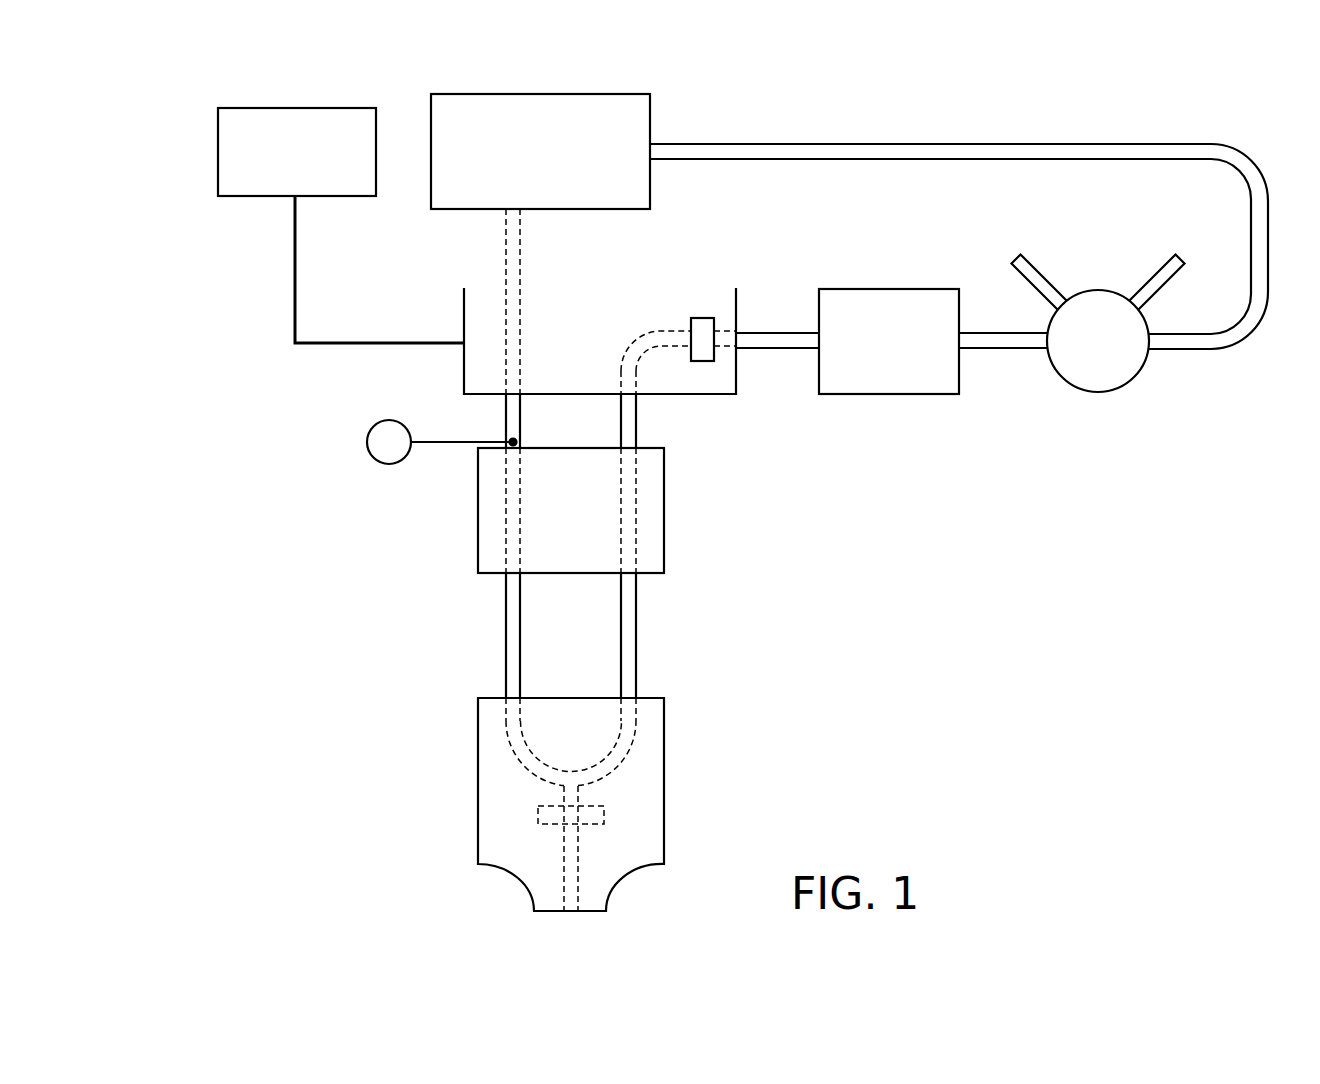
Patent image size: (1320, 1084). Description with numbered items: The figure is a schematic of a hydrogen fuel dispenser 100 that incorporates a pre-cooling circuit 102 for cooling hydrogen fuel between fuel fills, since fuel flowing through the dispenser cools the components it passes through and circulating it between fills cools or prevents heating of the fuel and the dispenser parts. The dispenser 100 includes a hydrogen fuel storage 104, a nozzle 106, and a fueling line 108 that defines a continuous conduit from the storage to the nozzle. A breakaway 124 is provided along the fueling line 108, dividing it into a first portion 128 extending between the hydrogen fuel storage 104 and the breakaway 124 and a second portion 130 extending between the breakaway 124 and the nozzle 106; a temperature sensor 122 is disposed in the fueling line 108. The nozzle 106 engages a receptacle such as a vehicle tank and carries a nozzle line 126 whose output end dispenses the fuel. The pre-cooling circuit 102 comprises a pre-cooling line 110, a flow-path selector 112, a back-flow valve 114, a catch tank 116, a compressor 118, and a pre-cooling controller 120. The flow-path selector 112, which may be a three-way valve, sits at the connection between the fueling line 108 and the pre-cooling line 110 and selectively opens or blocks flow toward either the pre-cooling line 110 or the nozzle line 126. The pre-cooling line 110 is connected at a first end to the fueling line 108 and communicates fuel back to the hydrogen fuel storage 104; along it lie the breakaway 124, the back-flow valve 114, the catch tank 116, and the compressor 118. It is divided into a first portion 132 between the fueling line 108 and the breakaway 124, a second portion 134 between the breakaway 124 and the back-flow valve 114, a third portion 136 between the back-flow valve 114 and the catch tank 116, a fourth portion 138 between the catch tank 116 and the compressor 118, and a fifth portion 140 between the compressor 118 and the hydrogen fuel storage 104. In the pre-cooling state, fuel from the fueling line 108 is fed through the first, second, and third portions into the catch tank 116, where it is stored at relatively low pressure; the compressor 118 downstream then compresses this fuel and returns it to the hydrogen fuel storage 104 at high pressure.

The hydrogen fuel dispenser 100 is at (202, 447).
The pre-cooling circuit 102 is at (813, 582).
The hydrogen fuel storage 104 is at (649, 113).
The nozzle 106 is at (563, 810).
The fueling line 108 is at (452, 465).
The pre-cooling line 110 is at (682, 546).
The flow-path selector 112 is at (603, 820).
The back-flow valve 114 is at (702, 317).
The catch tank 116 is at (907, 393).
The compressor 118 is at (1090, 391).
The pre-cooling controller 120 is at (217, 145).
The temperature sensor 122 is at (367, 430).
The breakaway 124 is at (477, 538).
The nozzle line 126 is at (562, 882).
The first portion of the fueling line 128 is at (503, 415).
The second portion of the fueling line 130 is at (505, 658).
The first portion of the pre-cooling line 132 is at (635, 657).
The second portion of the pre-cooling line 134 is at (637, 412).
The third portion of the pre-cooling line 136 is at (772, 330).
The fourth portion of the pre-cooling line 138 is at (1002, 348).
The fifth portion of the pre-cooling line 140 is at (1147, 143).